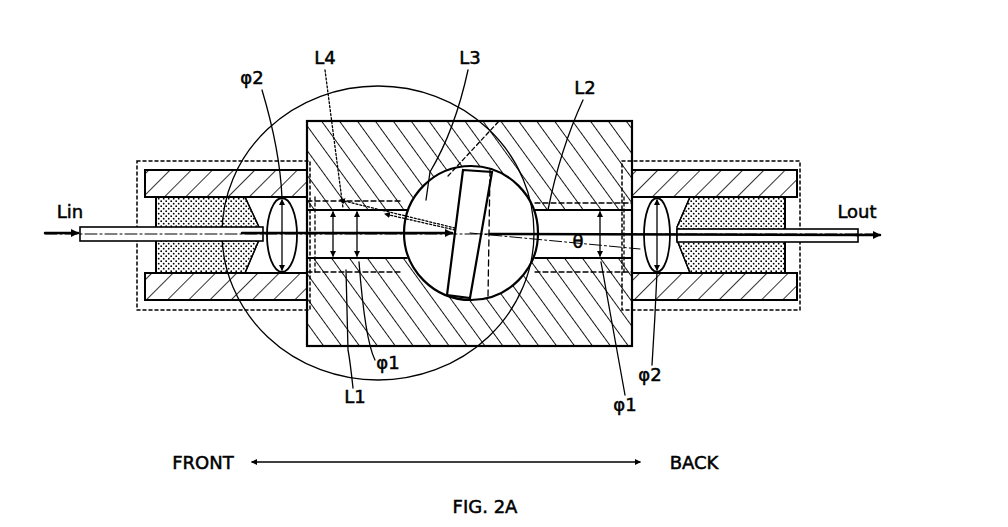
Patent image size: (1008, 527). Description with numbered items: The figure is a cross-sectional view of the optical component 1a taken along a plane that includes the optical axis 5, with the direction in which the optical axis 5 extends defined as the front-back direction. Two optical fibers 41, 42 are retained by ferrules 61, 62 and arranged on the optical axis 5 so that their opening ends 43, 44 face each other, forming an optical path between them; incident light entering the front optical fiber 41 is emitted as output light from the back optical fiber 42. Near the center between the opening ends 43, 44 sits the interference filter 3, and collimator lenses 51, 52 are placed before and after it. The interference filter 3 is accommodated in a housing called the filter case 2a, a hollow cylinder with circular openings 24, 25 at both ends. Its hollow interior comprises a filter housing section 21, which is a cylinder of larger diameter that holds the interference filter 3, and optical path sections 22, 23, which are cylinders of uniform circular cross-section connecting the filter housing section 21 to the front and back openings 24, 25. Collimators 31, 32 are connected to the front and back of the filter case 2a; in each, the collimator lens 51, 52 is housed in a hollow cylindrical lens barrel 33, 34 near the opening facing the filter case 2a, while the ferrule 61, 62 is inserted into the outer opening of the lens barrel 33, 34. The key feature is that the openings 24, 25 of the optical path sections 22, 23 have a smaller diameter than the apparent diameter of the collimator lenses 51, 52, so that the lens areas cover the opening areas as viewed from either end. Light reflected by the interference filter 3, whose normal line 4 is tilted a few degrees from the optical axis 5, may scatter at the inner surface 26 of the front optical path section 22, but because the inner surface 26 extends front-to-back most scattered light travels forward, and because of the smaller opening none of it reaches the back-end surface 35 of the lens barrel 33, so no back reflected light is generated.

The optical component 1a is at (556, 71).
The filter case 2a is at (629, 121).
The interference filter 3 is at (527, 192).
The normal line 4 is at (477, 322).
The optical axis 5 is at (775, 161).
The filter housing section 21 is at (535, 346).
The optical path section 22 is at (416, 346).
The optical path section 23 is at (583, 346).
The opening 24 is at (300, 199).
The opening 25 is at (638, 216).
The inner surface 26 is at (345, 256).
The collimator 31 is at (155, 311).
The collimator 32 is at (790, 311).
The lens barrel 33 is at (228, 183).
The lens barrel 34 is at (722, 186).
The back-end surface 35 is at (311, 181).
The optical fiber 41 is at (130, 226).
The optical fiber 42 is at (815, 231).
The opening end 43 is at (250, 241).
The opening end 44 is at (689, 244).
The collimator lens 51 is at (282, 273).
The collimator lens 52 is at (662, 232).
The ferrule 61 is at (170, 251).
The ferrule 62 is at (738, 264).